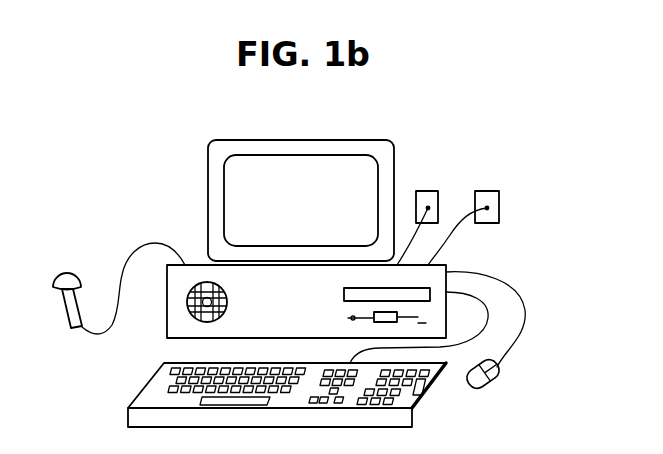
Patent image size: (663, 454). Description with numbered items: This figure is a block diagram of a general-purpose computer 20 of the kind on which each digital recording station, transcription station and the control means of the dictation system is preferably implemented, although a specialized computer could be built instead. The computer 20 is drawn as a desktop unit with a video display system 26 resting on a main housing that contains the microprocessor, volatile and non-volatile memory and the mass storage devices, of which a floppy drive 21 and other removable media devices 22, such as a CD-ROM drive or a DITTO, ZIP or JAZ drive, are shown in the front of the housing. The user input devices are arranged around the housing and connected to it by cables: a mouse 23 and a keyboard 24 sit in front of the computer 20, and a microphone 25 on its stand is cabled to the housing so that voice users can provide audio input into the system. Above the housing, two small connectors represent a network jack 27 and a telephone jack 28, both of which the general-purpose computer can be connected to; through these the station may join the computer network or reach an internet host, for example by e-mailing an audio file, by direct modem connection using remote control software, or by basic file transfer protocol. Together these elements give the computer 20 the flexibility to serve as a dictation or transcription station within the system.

The computer 20 is at (496, 120).
The floppy drive 21 is at (350, 318).
The removable media devices 22 is at (344, 294).
The mouse 23 is at (498, 383).
The keyboard 24 is at (412, 420).
The microphone 25 is at (70, 235).
The video display system 26 is at (345, 140).
The network jack 27 is at (427, 191).
The telephone jack 28 is at (489, 191).